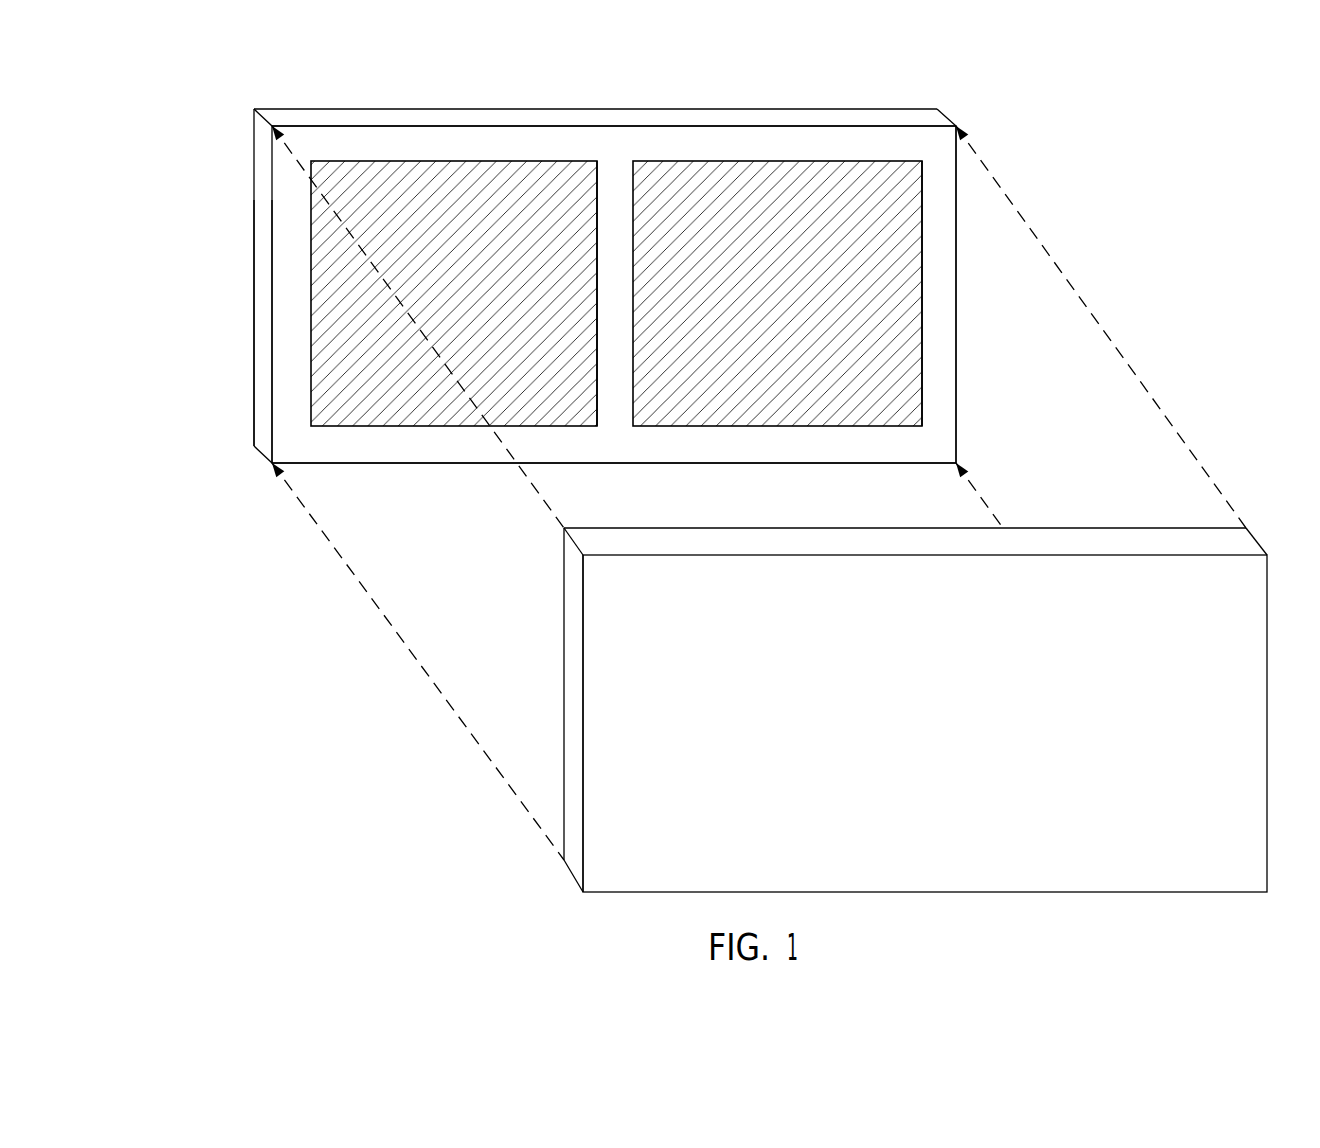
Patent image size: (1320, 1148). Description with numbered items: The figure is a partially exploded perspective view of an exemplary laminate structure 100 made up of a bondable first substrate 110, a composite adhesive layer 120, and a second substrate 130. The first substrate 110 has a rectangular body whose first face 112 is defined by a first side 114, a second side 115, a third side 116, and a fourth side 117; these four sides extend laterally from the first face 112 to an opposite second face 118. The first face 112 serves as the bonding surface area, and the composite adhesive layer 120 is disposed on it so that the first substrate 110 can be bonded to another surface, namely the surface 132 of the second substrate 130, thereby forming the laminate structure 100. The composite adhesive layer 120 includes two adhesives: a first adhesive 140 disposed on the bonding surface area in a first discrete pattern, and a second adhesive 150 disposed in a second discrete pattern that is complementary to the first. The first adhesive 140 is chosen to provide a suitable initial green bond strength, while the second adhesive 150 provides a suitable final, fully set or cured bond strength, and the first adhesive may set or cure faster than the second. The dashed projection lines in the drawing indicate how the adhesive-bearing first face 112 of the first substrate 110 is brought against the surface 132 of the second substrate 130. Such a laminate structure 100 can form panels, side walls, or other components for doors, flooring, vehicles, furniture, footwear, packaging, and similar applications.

The laminate structure 100 is at (180, 255).
The first substrate 110 is at (366, 97).
The first face 112 is at (678, 145).
The first side 114 is at (583, 117).
The second side 115 is at (956, 408).
The third side 116 is at (407, 463).
The fourth side 117 is at (263, 318).
The second face 118 is at (254, 162).
The composite adhesive layer 120 is at (948, 190).
The second substrate 130 is at (910, 737).
The surface 132 is at (565, 672).
The first adhesive 140 is at (932, 335).
The second adhesive 150 is at (439, 304).